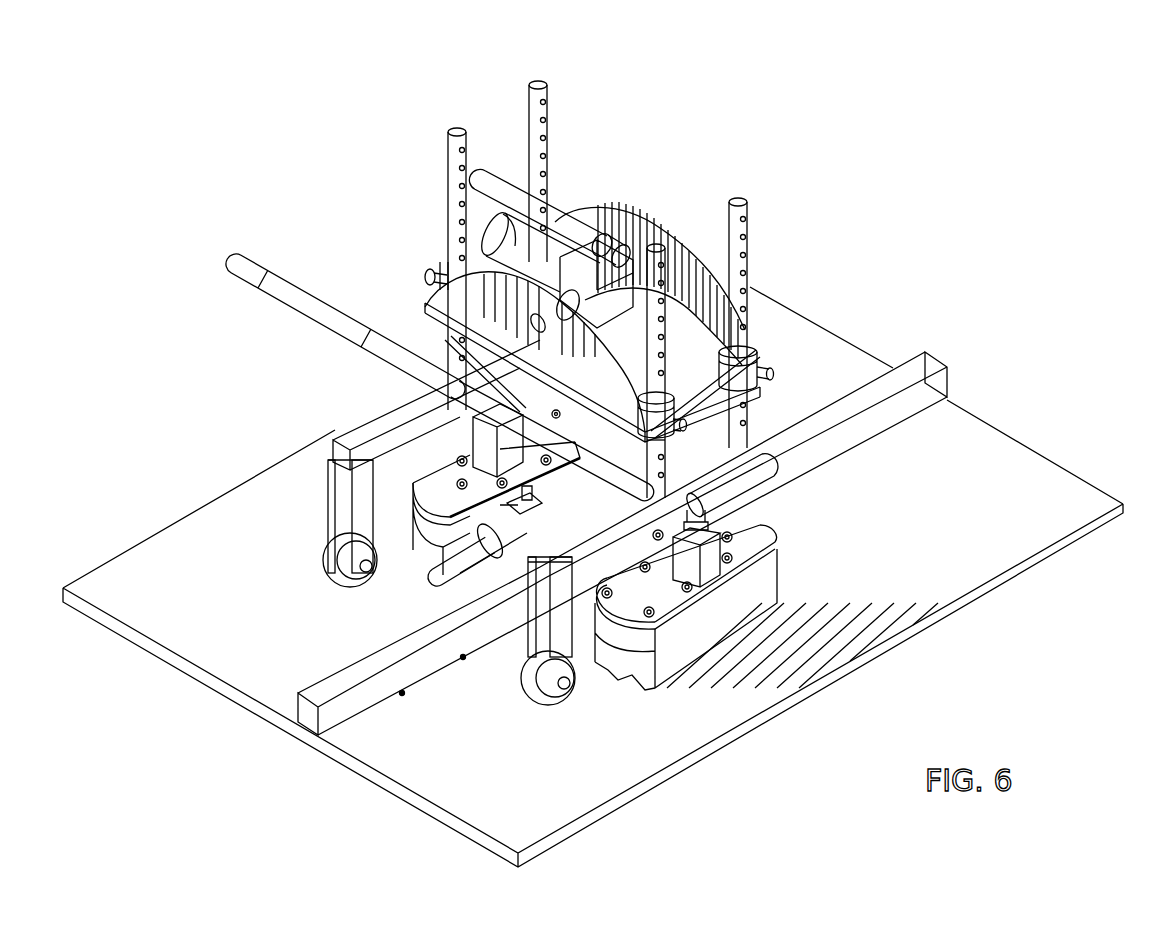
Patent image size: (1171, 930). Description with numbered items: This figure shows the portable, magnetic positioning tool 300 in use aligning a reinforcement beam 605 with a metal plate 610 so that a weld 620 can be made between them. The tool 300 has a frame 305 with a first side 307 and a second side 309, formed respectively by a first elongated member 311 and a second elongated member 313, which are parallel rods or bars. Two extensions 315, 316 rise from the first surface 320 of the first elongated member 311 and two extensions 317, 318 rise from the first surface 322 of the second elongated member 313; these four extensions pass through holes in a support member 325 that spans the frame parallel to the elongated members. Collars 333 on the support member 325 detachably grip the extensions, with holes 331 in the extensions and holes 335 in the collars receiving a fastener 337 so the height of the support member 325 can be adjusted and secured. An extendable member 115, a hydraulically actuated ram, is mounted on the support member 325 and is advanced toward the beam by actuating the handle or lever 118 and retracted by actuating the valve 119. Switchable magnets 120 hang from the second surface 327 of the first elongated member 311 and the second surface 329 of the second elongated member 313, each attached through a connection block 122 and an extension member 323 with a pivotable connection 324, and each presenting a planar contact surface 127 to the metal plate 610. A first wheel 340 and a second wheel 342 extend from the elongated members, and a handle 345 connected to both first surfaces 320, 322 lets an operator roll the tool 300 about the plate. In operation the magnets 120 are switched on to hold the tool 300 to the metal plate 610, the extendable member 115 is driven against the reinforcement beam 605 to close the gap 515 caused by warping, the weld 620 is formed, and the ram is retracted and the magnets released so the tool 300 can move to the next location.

The portable, magnetic positioning tool 300 is at (336, 213).
The frame 305 is at (618, 207).
The first side 307 is at (322, 427).
The second side 309 is at (782, 521).
The first elongated member 311 is at (328, 470).
The second elongated member 313 is at (527, 578).
The extension 315 is at (446, 158).
The extension 316 is at (528, 101).
The extension 317 is at (670, 280).
The extension 318 is at (750, 205).
The first surface 320 is at (398, 410).
The first surface 322 is at (550, 548).
The extension member 323 is at (638, 592).
The connection 324 is at (708, 518).
The support member 325 is at (670, 346).
The second surface 327 is at (379, 454).
The second surface 329 is at (752, 470).
The holes 331 is at (547, 113).
The collars 333 is at (748, 393).
The holes 335 is at (679, 412).
The fastener 337 is at (768, 368).
The first wheel 340 is at (330, 568).
The second wheel 342 is at (528, 681).
The handle 345 is at (254, 256).
The handle or lever 118 is at (496, 172).
The valve 119 is at (586, 340).
The extendable member 115 is at (570, 410).
The switchable magnets 120 is at (417, 535).
The connection block 122 is at (482, 444).
The contact surface 127 is at (642, 687).
The gap 515 is at (948, 397).
The reinforcement beam 605 is at (368, 666).
The metal plate 610 is at (1008, 535).
The weld 620 is at (334, 727).